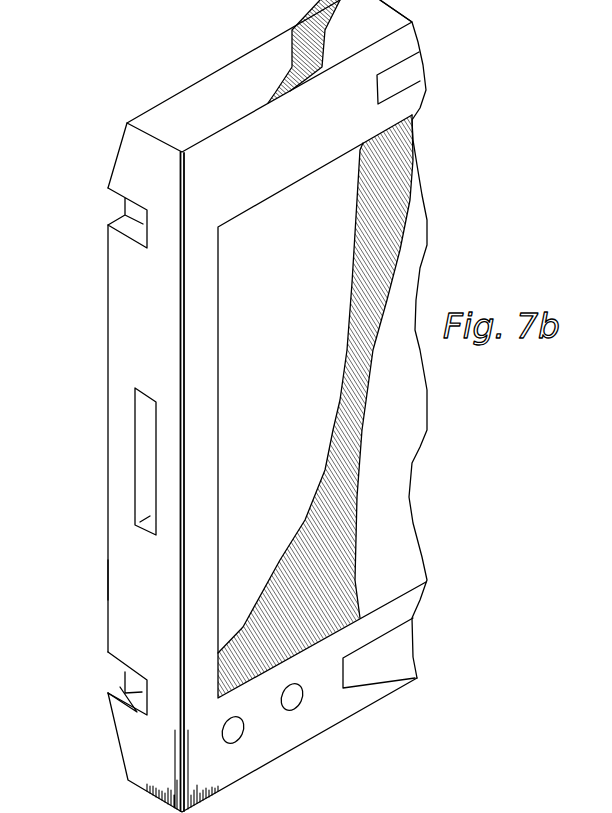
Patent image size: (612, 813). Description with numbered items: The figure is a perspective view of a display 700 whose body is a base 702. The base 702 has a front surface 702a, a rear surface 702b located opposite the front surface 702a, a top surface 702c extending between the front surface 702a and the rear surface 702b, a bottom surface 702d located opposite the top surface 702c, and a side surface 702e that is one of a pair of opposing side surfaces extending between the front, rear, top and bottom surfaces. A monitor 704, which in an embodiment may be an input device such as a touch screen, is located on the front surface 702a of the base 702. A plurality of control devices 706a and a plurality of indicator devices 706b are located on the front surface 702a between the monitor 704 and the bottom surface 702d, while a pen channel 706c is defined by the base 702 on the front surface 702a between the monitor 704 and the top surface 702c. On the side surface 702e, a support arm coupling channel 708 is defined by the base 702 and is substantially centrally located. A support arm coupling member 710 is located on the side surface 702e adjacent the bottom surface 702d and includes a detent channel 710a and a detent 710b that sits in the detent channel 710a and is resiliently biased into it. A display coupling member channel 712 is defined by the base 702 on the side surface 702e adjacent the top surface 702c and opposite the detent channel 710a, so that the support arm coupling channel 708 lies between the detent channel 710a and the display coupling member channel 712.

The display 700 is at (99, 61).
The base 702 is at (102, 385).
The front surface 702a is at (412, 600).
The rear surface 702b is at (108, 295).
The top surface 702c is at (222, 77).
The bottom surface 702d is at (343, 720).
The side surface 702e is at (123, 575).
The monitor 704 is at (309, 345).
The control devices 706a is at (246, 738).
The indicator devices 706b is at (372, 658).
The pen channel 706c is at (406, 65).
The support arm coupling channel 708 is at (145, 516).
The support arm coupling member 710 is at (127, 720).
The detent channel 710a is at (122, 704).
The detent 710b is at (125, 680).
The display coupling member channel 712 is at (112, 208).